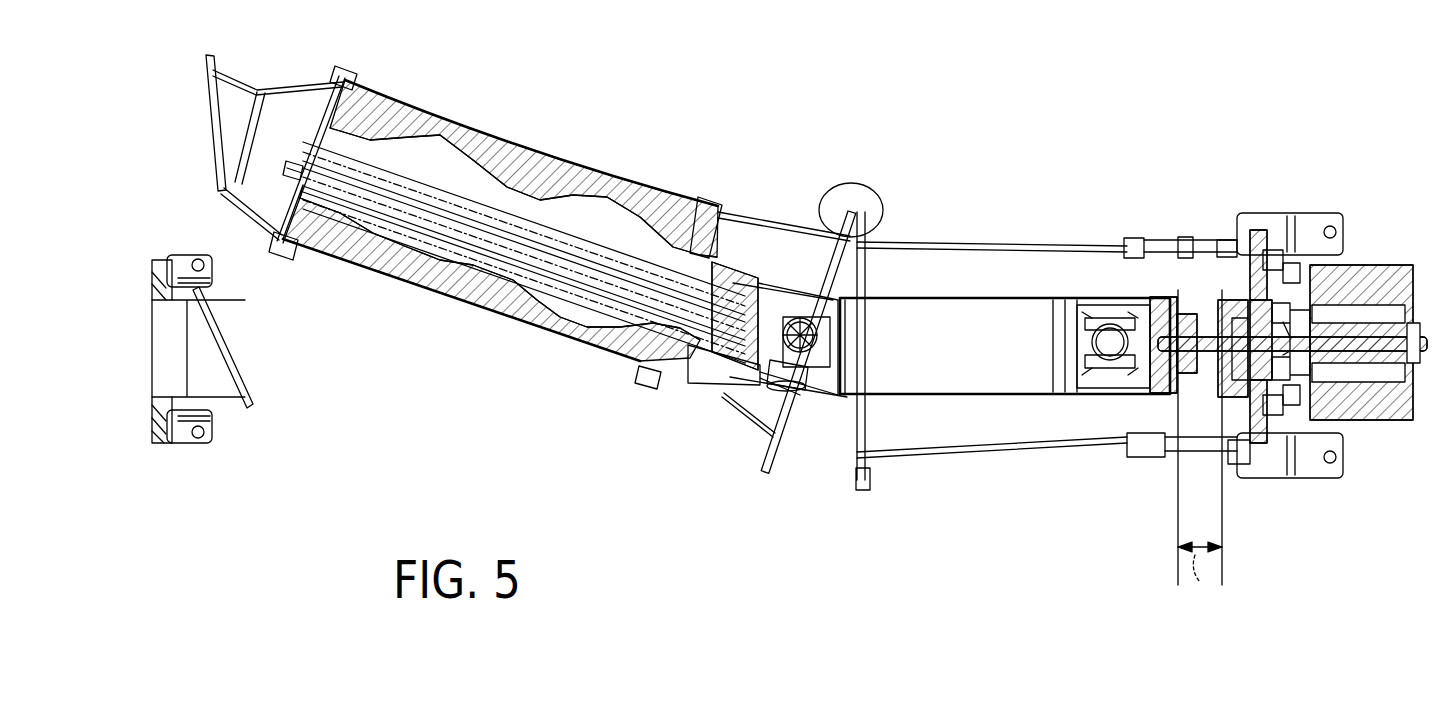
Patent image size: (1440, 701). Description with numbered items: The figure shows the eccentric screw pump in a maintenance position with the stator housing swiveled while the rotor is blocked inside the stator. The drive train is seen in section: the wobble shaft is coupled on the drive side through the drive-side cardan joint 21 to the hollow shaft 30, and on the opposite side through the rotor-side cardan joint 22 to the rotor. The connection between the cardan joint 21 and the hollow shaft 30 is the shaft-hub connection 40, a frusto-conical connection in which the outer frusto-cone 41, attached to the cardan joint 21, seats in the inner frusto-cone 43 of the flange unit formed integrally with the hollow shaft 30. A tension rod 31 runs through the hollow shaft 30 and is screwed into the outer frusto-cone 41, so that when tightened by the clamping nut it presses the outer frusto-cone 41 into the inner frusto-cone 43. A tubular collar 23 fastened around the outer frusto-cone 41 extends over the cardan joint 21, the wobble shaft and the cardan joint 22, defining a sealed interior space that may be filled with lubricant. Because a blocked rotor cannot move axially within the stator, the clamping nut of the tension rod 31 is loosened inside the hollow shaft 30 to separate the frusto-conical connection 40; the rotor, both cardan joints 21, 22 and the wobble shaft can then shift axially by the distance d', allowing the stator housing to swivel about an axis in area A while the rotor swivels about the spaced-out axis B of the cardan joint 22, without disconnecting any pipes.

The drive-side cardan joint 21 is at (1106, 306).
The rotor-side cardan joint 22 is at (797, 305).
The collar 23 is at (952, 297).
The hollow shaft 30 is at (1282, 354).
The tension rod 31 is at (1305, 345).
The shaft-hub connection 40 is at (1187, 278).
The outer frusto-cone 41 is at (1160, 308).
The inner frusto-cone 43 is at (1242, 383).
The area A is at (850, 186).
The swivel axis B is at (810, 350).
The distance d' is at (1216, 589).